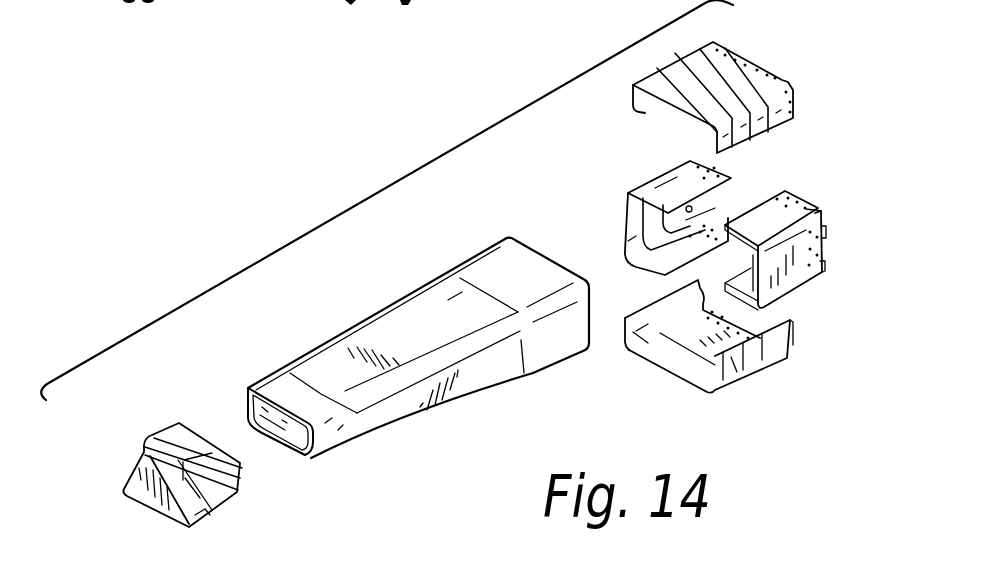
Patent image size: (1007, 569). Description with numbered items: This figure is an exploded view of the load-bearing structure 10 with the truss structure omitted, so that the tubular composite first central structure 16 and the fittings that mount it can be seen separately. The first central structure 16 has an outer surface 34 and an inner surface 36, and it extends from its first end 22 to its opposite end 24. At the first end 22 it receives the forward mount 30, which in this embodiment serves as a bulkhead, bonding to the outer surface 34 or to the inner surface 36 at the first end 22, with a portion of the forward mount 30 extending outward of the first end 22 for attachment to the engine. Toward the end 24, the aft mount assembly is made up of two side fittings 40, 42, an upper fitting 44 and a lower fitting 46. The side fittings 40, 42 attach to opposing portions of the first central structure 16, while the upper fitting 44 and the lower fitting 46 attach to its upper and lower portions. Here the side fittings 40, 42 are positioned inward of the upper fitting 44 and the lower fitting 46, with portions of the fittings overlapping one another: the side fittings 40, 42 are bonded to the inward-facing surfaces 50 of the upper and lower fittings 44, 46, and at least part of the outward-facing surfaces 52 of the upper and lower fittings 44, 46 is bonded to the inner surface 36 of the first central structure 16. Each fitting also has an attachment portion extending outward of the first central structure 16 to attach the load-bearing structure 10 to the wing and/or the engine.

The load-bearing structure 10 is at (364, 199).
The first central structure 16 is at (410, 305).
The first end 22 is at (278, 450).
The rear end of sleeve 24 is at (533, 254).
The forward mount 30 is at (144, 487).
The outer surface 34 is at (486, 328).
The inner surface 36 is at (247, 416).
The side fitting 40 is at (627, 186).
The side fitting 42 is at (826, 266).
The upper fitting 44 is at (740, 68).
The lower fitting 46 is at (760, 362).
The inward-facing surfaces 50 is at (645, 102).
The outward-facing surfaces 52 is at (733, 367).